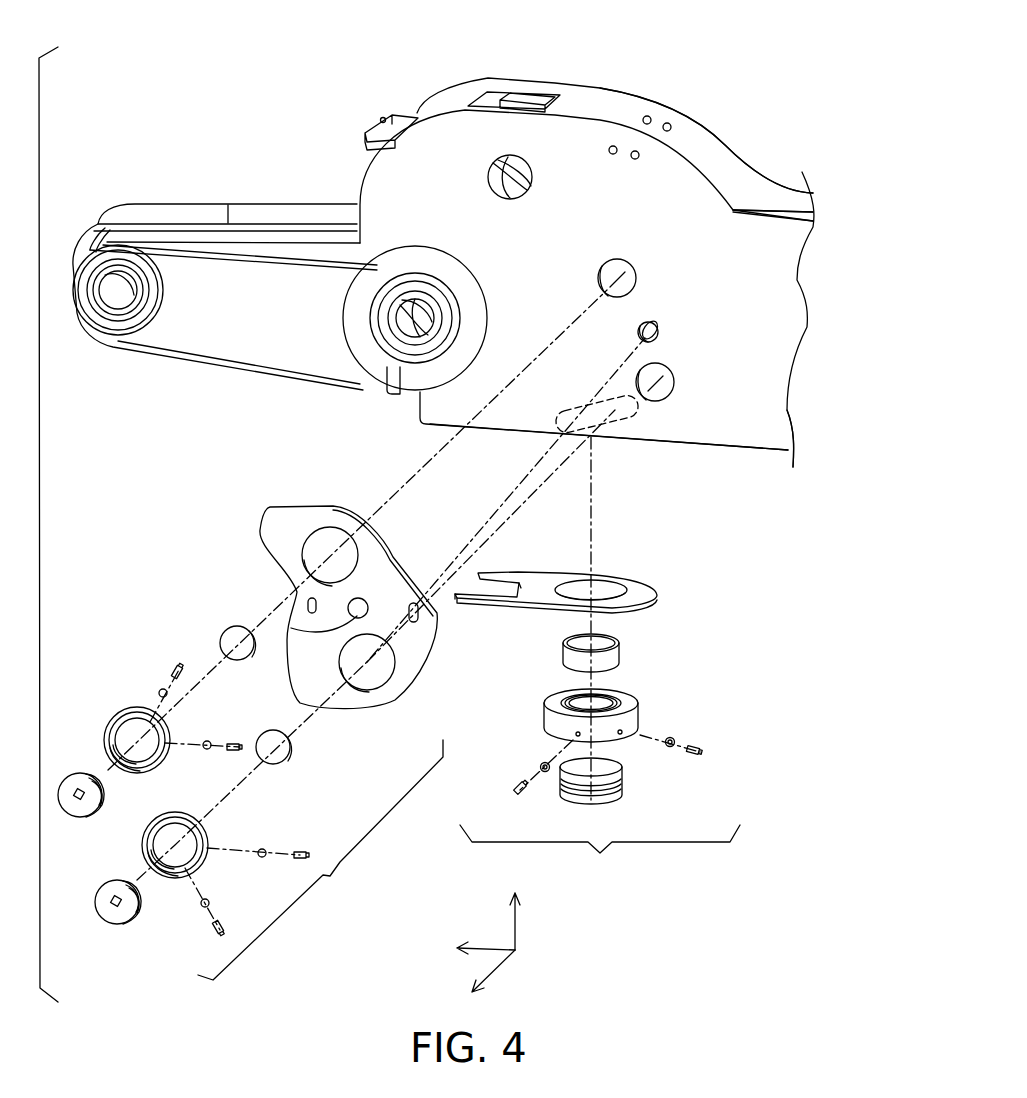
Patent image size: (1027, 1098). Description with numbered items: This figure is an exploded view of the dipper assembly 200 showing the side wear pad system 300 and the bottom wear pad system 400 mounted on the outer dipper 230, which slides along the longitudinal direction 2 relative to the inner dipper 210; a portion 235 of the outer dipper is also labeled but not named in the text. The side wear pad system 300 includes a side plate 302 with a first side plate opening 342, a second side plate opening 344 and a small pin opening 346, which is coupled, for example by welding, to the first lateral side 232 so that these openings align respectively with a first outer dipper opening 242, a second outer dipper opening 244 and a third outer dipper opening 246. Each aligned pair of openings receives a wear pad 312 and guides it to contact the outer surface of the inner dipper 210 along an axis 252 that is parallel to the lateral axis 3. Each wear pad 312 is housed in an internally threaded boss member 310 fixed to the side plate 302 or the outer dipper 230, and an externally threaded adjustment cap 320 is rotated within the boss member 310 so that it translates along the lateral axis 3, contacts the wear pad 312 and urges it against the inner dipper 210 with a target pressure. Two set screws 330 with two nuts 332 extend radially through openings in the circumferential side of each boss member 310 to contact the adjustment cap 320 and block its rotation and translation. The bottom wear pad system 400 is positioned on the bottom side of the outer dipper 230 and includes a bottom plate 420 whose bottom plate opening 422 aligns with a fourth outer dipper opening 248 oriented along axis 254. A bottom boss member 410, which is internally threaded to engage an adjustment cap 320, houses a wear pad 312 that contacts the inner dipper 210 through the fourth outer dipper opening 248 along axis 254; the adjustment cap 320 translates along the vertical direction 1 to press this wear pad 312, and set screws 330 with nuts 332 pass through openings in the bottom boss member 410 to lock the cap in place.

The hinge assembly 200 is at (622, 62).
The inner dipper 210 is at (255, 215).
The outer dipper 230 is at (735, 228).
The first lateral side 232 is at (757, 437).
The rail 235 is at (783, 215).
The first outer dipper opening 242 is at (632, 266).
The second outer dipper opening 244 is at (668, 373).
The third outer dipper opening 246 is at (656, 326).
The fourth outer dipper opening 248 is at (650, 412).
The axis 252 is at (427, 462).
The axis 254 is at (592, 512).
The side wear pad system 300 is at (320, 860).
The side plate 302 is at (340, 617).
The boss member 310 is at (120, 715).
The wear pad 312 is at (222, 632).
The adjustment cap 320 is at (65, 815).
The set screw 330 is at (175, 668).
The nut 332 is at (160, 690).
The first side plate opening 342 is at (270, 510).
The second side plate opening 344 is at (398, 662).
The small pin opening 346 is at (300, 608).
The bottom wear pad system 400 is at (600, 856).
The bottom boss member 410 is at (545, 710).
The bottom plate 420 is at (595, 590).
The bottom plate opening 422 is at (607, 582).
The vertical direction 1 is at (517, 930).
The longitudinal direction 2 is at (490, 948).
The lateral axis 3 is at (497, 968).